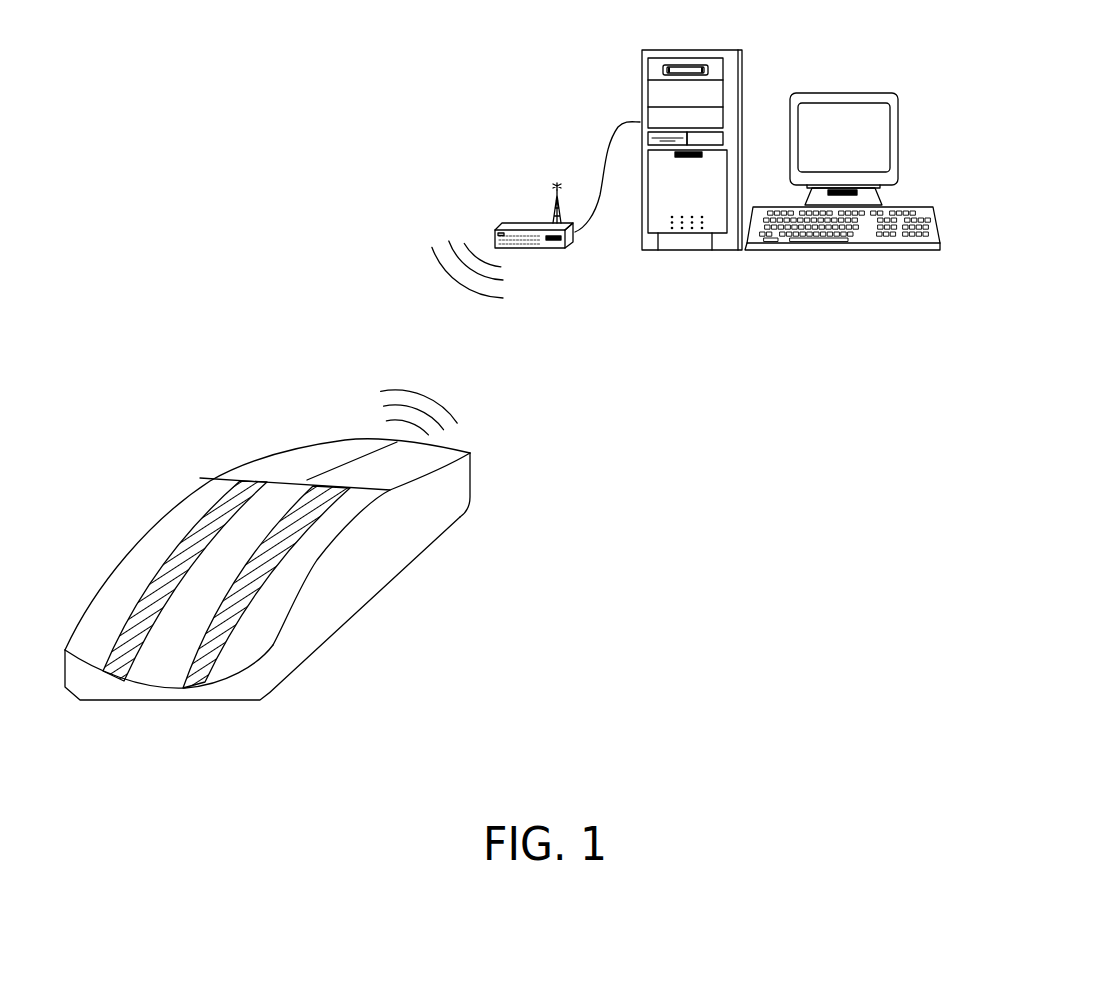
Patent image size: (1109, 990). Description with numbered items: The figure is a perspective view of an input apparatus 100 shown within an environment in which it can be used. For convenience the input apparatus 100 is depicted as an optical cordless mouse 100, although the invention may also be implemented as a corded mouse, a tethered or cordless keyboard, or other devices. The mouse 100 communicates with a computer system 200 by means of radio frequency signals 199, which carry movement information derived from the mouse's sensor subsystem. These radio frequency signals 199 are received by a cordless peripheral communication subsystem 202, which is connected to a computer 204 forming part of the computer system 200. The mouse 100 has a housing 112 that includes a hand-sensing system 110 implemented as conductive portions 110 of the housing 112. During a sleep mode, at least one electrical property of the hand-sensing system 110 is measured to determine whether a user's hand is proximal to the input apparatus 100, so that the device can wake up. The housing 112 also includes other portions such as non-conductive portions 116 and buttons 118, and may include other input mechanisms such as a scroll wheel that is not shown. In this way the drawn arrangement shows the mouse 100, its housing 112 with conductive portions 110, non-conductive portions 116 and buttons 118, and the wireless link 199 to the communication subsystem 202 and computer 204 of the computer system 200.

The input apparatus 100 is at (183, 366).
The hand-sensing system 110 is at (177, 540).
The housing 112 is at (475, 442).
The non-conductive portions 116 is at (323, 636).
The buttons 118 is at (333, 450).
The radio frequency signals 199 is at (405, 385).
The computer system 200 is at (579, 53).
The cordless peripheral communication subsystem 202 is at (533, 226).
The computer 204 is at (728, 50).